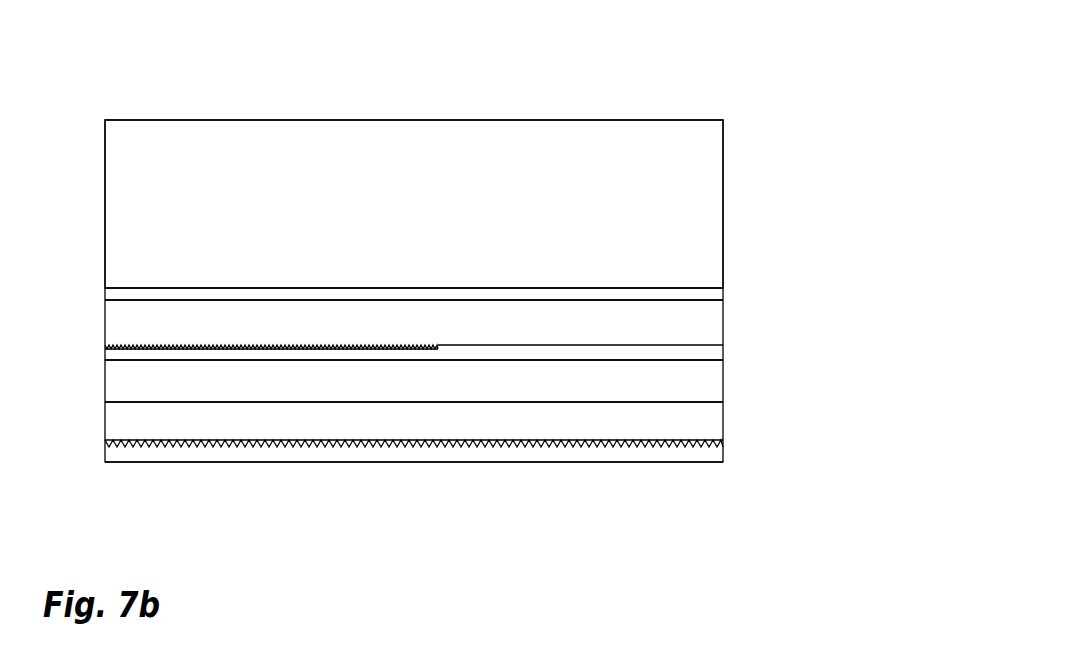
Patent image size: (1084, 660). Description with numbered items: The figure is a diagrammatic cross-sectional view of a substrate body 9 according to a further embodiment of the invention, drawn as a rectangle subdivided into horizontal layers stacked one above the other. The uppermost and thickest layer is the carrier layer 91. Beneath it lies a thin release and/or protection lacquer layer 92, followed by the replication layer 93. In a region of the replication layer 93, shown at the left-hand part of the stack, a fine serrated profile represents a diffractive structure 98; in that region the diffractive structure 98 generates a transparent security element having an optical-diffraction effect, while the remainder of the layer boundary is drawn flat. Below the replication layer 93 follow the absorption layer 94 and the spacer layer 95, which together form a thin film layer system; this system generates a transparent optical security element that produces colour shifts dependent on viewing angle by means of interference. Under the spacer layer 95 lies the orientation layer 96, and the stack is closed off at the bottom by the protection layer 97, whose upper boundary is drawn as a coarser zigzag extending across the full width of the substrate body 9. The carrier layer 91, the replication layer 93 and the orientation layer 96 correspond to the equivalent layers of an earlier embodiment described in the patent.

The substrate body 9 is at (681, 93).
The carrier layer 91 is at (713, 172).
The release and/or protection lacquer layer 92 is at (712, 294).
The replication layer 93 is at (712, 320).
The absorption layer 94 is at (715, 353).
The spacer layer 95 is at (713, 388).
The orientation layer 96 is at (118, 427).
The protection layer 97 is at (117, 455).
The diffractive structure 98 is at (122, 342).